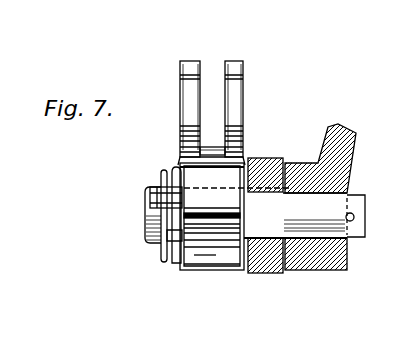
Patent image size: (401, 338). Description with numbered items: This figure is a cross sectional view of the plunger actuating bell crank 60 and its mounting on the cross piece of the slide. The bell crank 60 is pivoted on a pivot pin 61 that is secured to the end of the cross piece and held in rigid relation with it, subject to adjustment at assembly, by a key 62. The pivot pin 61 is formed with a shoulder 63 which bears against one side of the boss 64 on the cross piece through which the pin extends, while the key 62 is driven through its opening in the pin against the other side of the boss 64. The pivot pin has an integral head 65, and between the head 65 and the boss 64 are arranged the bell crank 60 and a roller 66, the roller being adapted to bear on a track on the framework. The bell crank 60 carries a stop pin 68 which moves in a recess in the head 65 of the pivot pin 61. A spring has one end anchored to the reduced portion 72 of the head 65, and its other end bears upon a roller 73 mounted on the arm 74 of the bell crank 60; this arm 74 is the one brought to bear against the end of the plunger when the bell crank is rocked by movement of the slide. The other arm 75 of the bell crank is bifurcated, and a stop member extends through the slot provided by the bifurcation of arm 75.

The plunger actuating bell crank 60 is at (208, 262).
The pivot pin 61 is at (305, 208).
The key 62 is at (355, 221).
The shoulder 63 is at (264, 263).
The boss 64 is at (306, 250).
The head 65 is at (177, 261).
The roller 66 is at (270, 158).
The stop pin 68 is at (163, 250).
The reduced portion 72 is at (150, 237).
The roller 73 is at (150, 189).
The arm 74 is at (223, 210).
The arm 75 is at (236, 100).